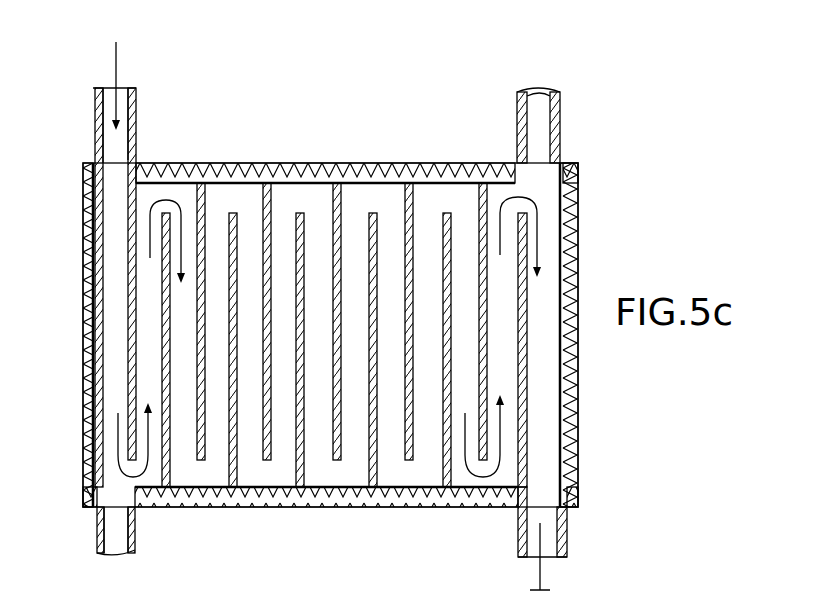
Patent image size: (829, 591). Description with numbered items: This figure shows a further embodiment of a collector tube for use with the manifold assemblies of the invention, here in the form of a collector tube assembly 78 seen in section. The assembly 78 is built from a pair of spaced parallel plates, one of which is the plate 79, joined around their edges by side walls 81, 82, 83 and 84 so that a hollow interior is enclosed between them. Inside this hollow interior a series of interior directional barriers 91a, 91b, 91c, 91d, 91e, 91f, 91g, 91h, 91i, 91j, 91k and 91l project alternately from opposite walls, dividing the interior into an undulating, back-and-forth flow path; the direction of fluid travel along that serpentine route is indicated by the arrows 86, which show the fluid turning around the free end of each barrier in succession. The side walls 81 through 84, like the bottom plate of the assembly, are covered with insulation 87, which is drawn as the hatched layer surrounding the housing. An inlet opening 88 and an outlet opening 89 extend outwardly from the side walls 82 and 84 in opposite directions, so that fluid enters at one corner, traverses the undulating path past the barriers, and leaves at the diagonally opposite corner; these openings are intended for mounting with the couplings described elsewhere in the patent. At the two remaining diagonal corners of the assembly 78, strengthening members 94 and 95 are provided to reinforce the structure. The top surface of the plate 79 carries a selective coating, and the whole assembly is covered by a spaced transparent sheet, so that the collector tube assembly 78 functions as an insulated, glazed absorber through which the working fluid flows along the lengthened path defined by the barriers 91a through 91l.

The collector tube assembly 78 is at (430, 104).
The plate 79 is at (327, 342).
The side wall 81 is at (93, 272).
The side wall 82 is at (268, 180).
The side wall 83 is at (566, 430).
The side wall 84 is at (217, 490).
The arrows 86 is at (113, 97).
The insulation 87 is at (372, 183).
The inlet opening 88 is at (137, 120).
The outlet opening 89 is at (547, 537).
The strengthening member 94 is at (108, 524).
The strengthening member 95 is at (543, 130).
The interior directional barrier 91a is at (130, 230).
The interior directional barrier 91b is at (168, 472).
The interior directional barrier 91c is at (202, 225).
The interior directional barrier 91d is at (233, 217).
The interior directional barrier 91e is at (270, 443).
The interior directional barrier 91f is at (300, 215).
The interior directional barrier 91g is at (340, 212).
The interior directional barrier 91h is at (378, 215).
The interior directional barrier 91i is at (412, 225).
The interior directional barrier 91j is at (457, 470).
The interior directional barrier 91k is at (478, 197).
The interior directional barrier 91l is at (528, 362).